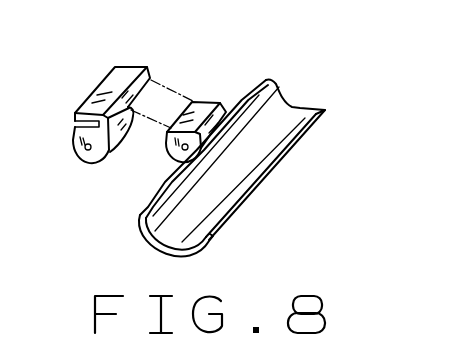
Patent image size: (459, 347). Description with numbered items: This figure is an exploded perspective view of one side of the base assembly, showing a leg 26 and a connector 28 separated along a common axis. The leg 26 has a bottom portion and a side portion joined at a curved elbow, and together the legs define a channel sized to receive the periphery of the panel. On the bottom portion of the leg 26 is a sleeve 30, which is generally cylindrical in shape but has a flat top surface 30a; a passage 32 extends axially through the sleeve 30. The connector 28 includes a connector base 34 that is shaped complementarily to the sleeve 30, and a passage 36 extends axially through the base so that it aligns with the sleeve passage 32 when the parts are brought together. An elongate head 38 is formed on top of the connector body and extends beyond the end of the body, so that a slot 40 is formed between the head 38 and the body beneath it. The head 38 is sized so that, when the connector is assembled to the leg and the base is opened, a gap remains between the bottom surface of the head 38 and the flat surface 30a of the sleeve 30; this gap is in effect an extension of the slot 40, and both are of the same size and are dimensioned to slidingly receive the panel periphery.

The leg 26 is at (266, 192).
The connector 28 is at (112, 54).
The sleeve 30 is at (225, 107).
The flat top surface 30a is at (197, 117).
The passage 32 is at (184, 150).
The connector base 34 is at (72, 157).
The passage 36 is at (87, 150).
The head 38 is at (140, 67).
The slot 40 is at (75, 125).